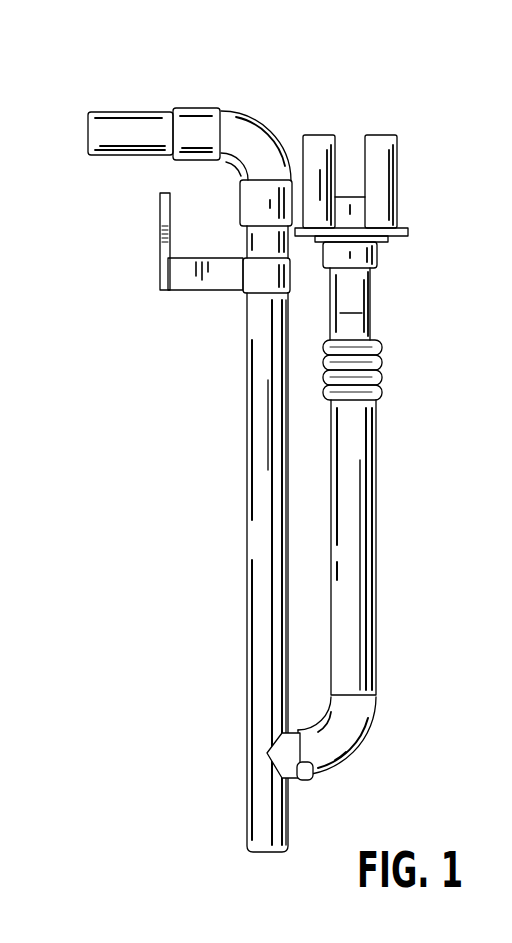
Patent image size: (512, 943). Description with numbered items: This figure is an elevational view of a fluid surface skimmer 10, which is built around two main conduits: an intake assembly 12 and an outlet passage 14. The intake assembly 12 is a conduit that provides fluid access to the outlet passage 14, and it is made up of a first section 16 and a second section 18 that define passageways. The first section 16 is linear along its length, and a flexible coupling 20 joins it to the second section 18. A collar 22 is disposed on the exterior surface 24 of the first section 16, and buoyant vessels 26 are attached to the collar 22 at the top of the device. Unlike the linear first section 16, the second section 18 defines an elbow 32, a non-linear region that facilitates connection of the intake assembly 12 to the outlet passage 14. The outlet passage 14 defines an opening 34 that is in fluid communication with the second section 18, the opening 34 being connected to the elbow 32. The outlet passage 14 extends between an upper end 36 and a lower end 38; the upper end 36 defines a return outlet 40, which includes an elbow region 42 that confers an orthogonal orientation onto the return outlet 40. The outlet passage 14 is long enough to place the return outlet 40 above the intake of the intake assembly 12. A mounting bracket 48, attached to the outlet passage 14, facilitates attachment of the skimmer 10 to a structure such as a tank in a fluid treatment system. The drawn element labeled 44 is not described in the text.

The surface skimmer 10 is at (440, 386).
The intake assembly 12 is at (385, 538).
The outlet passage 14 is at (240, 524).
The first section 16 is at (378, 298).
The second section 18 is at (378, 460).
The flexible coupling 20 is at (380, 366).
The collar 22 is at (408, 232).
The exterior surface 24 is at (350, 304).
The buoyant vessel 26 is at (318, 135).
The elbow 32 is at (355, 752).
The opening 34 is at (305, 770).
The upper end 36 is at (243, 238).
The lower end 38 is at (247, 800).
The return outlet 40 is at (88, 140).
The elbow region 42 is at (262, 118).
The flange 44 is at (400, 207).
The mounting bracket 48 is at (162, 262).